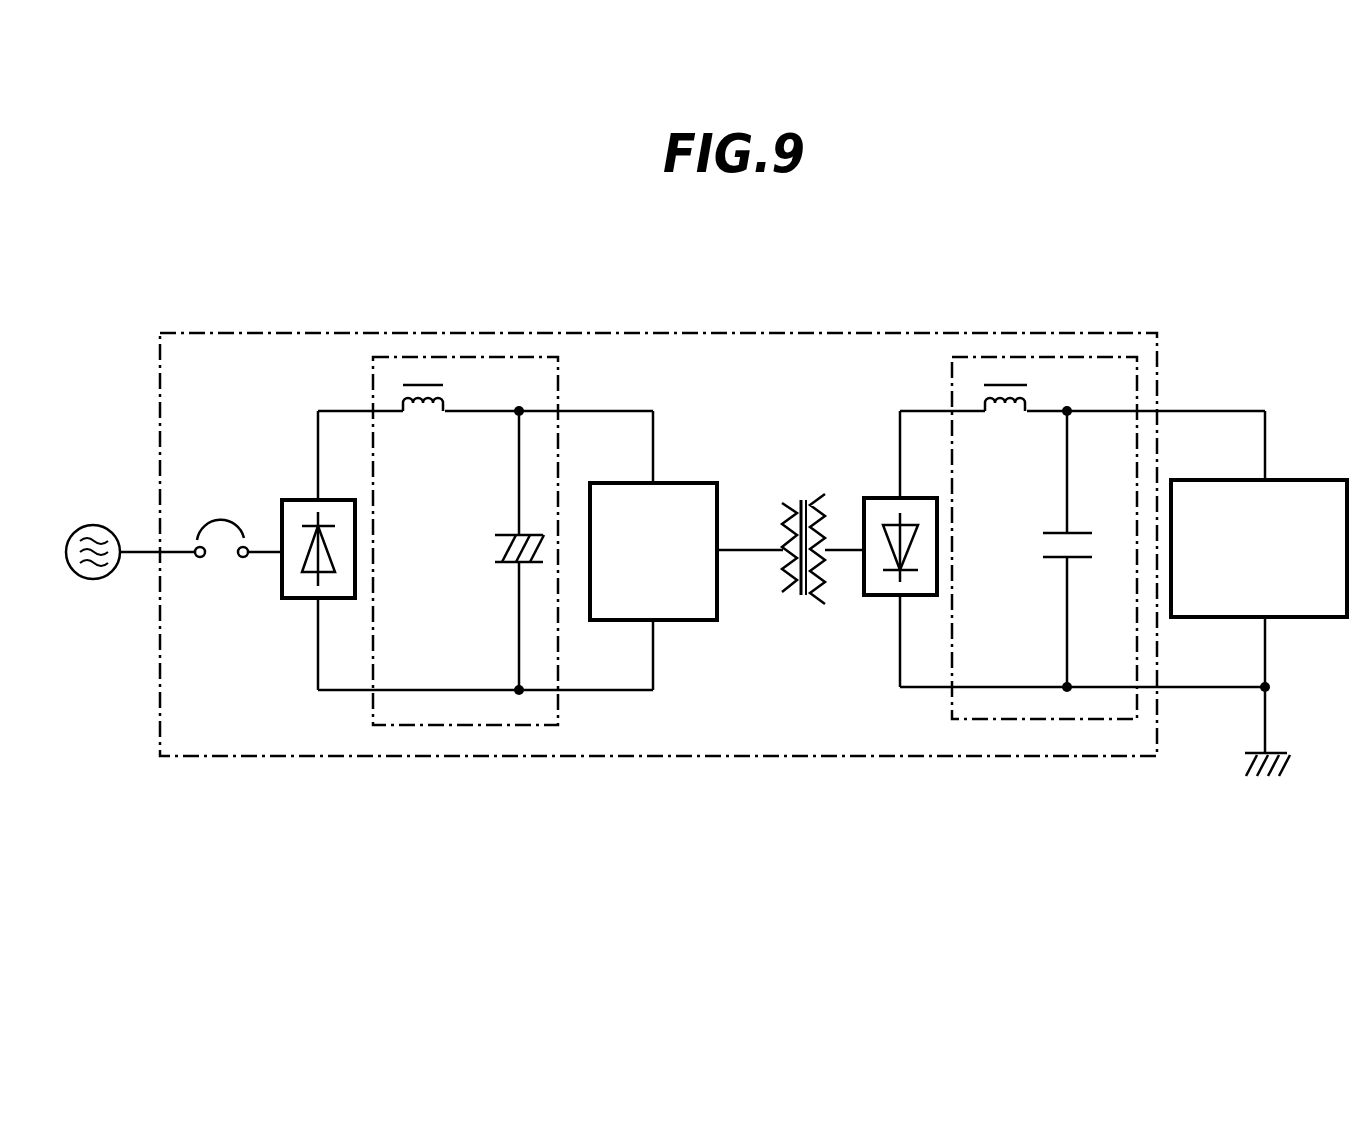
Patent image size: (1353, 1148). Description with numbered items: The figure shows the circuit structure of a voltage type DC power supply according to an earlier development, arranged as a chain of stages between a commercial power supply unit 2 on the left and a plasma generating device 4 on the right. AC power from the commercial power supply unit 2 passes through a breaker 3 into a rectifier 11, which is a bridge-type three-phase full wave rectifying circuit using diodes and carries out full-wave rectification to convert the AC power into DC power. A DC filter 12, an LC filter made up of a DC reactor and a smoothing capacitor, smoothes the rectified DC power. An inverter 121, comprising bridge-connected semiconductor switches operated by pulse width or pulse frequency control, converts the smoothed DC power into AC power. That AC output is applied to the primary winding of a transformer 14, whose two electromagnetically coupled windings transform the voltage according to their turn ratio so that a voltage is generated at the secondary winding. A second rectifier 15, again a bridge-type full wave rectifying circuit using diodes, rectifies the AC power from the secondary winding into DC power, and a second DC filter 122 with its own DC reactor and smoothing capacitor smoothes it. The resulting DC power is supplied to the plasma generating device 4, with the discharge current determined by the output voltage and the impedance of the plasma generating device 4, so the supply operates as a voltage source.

The commercial power supply unit 2 is at (94, 580).
The breaker 3 is at (220, 565).
The rectifier 11 is at (292, 600).
The DC filter 12 is at (477, 357).
The inverter 121 is at (677, 622).
The transformer 14 is at (800, 608).
The rectifier 15 is at (873, 598).
The DC filter 122 is at (1051, 357).
The plasma generating device 4 is at (1321, 478).